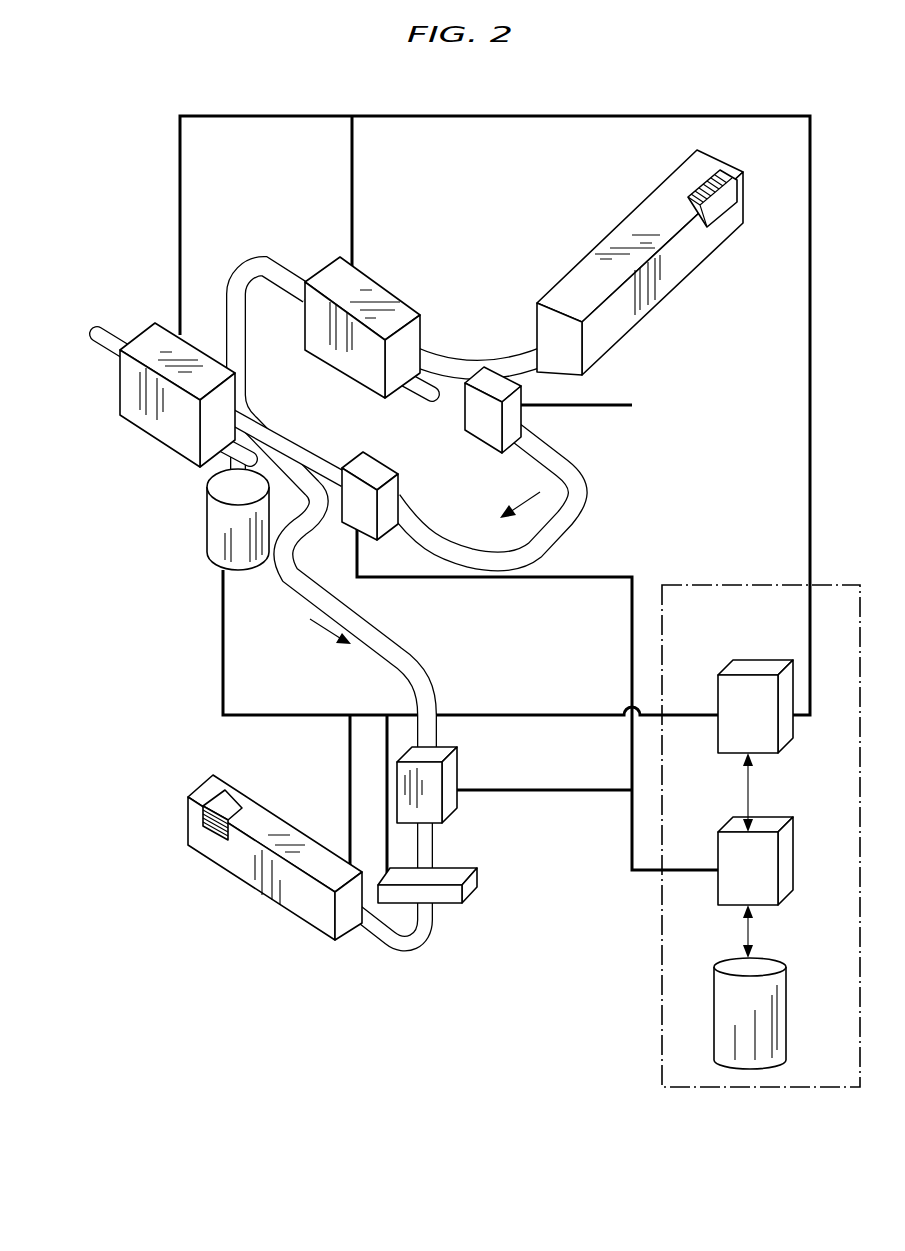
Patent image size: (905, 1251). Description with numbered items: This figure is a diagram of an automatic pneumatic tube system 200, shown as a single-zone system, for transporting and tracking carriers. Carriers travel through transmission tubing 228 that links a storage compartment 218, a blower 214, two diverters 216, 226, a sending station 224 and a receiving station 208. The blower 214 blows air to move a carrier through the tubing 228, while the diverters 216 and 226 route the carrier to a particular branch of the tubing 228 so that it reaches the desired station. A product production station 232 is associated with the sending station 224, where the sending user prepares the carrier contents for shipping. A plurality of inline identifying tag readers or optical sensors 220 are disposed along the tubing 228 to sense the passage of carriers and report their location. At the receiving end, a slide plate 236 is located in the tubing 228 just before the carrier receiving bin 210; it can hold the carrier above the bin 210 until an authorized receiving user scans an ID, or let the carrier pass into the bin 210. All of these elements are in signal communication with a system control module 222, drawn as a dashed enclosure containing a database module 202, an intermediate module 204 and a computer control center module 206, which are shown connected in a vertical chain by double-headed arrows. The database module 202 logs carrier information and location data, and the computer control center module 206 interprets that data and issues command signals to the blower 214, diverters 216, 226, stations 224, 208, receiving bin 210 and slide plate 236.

The pneumatic tube system 200 is at (133, 172).
The database module 202 is at (785, 988).
The processor 204 is at (795, 840).
The computer control center module 206 is at (795, 725).
The receiving station 208 is at (254, 850).
The carrier receiving bin 210 is at (217, 810).
The blower 214 is at (207, 520).
The diverter 216 is at (137, 427).
The storage compartment 218 is at (97, 345).
The inline identifying tag reader or optical sensor 220 is at (523, 402).
The system control module 222 is at (663, 1020).
The sending station 224 is at (662, 262).
The diverter 226 is at (382, 283).
The transmission tubing 228 is at (387, 657).
The product production station 232 is at (717, 200).
The slide plate 236 is at (453, 905).